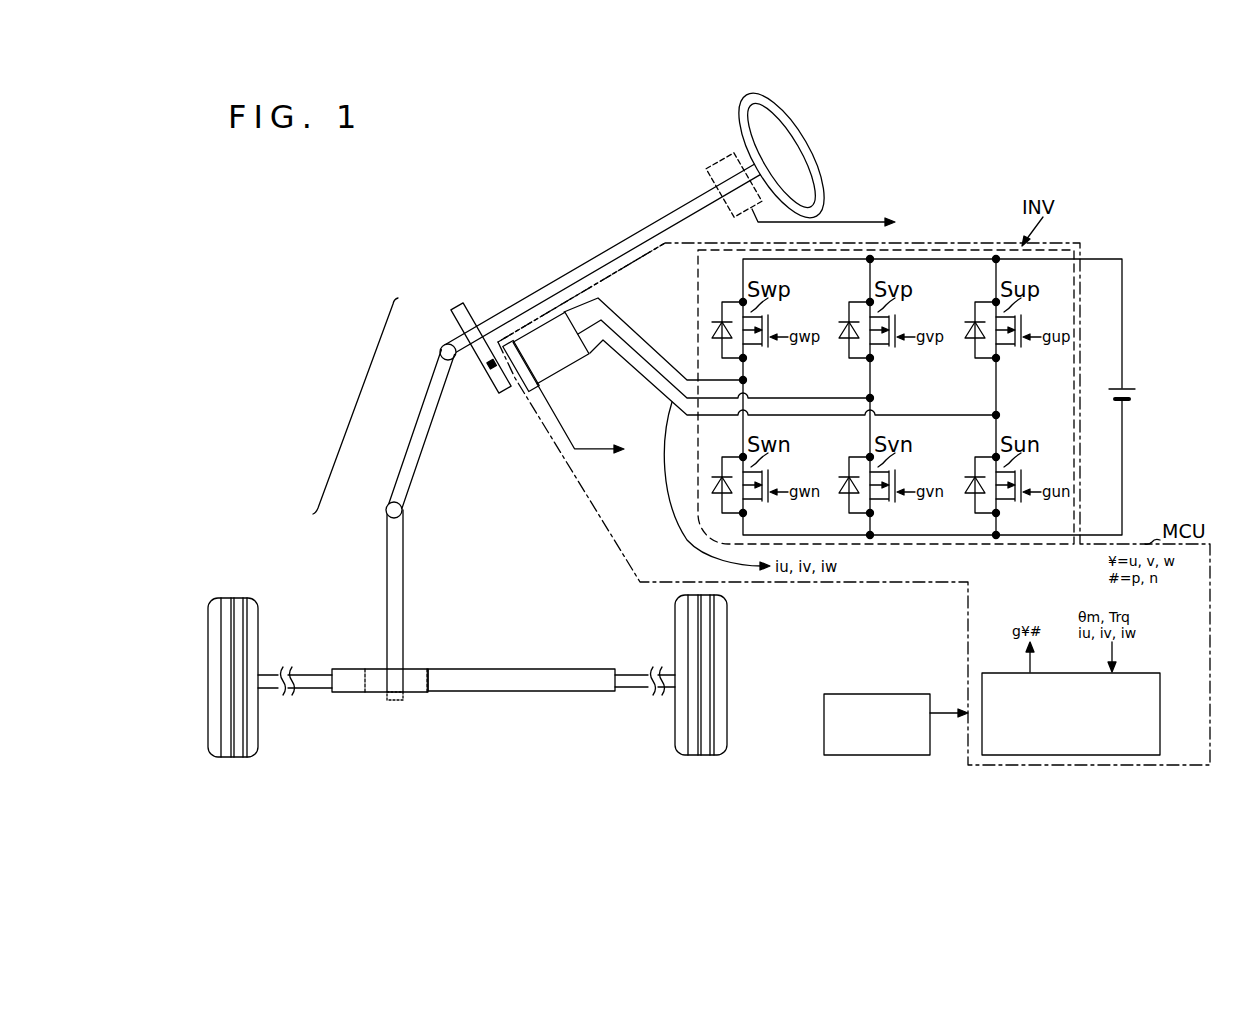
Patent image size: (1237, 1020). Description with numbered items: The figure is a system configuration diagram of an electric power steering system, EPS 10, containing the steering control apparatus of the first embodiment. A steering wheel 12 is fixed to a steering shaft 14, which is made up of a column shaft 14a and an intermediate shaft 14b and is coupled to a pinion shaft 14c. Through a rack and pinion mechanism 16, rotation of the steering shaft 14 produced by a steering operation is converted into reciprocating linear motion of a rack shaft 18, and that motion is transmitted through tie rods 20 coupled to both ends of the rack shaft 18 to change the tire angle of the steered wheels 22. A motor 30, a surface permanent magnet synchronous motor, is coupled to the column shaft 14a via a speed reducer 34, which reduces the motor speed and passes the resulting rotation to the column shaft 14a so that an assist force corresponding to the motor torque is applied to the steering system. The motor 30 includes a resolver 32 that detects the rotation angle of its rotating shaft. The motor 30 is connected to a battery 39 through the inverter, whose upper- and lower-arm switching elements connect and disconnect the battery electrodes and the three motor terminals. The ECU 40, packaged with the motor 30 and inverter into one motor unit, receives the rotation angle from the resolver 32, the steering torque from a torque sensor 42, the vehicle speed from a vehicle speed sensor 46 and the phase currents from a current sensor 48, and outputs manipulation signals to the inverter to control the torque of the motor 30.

The electric power steering system 10 is at (1124, 146).
The steering wheel 12 is at (809, 140).
The steering shaft 14 is at (355, 408).
The column shaft 14a is at (446, 343).
The intermediate shaft 14b is at (418, 430).
The pinion shaft 14c is at (388, 524).
The rack and pinion mechanism 16 is at (418, 670).
The rack shaft 18 is at (469, 668).
The tie rods 20 is at (629, 689).
The steered wheels 22 is at (727, 670).
The motor 30 is at (567, 362).
The resolver 32 is at (531, 388).
The speed reducer 34 is at (487, 388).
The battery 39 is at (1136, 388).
The ECU 40 is at (1161, 713).
The torque sensor 42 is at (714, 164).
The vehicle speed sensor 46 is at (848, 694).
The current sensor 48 is at (677, 390).